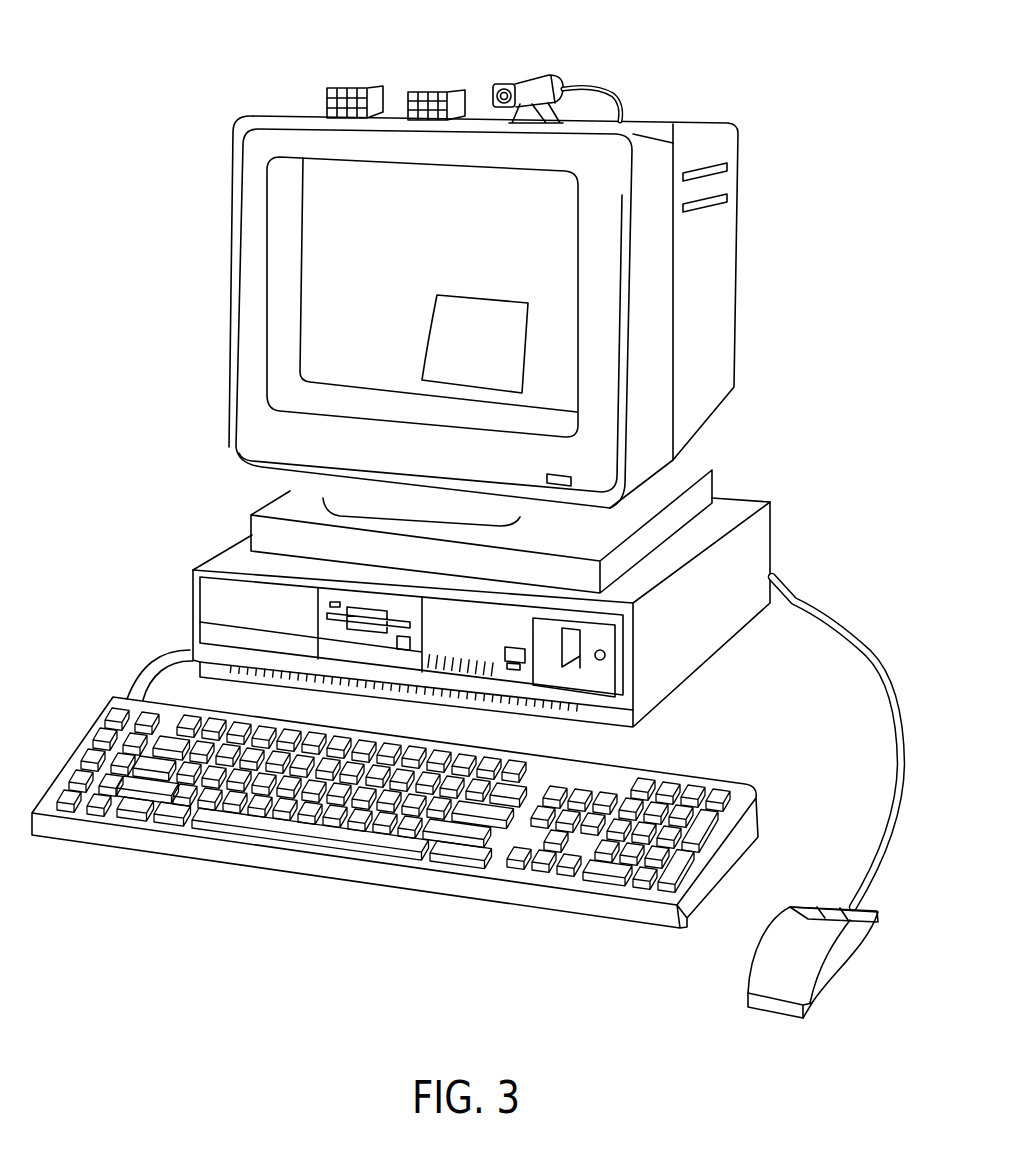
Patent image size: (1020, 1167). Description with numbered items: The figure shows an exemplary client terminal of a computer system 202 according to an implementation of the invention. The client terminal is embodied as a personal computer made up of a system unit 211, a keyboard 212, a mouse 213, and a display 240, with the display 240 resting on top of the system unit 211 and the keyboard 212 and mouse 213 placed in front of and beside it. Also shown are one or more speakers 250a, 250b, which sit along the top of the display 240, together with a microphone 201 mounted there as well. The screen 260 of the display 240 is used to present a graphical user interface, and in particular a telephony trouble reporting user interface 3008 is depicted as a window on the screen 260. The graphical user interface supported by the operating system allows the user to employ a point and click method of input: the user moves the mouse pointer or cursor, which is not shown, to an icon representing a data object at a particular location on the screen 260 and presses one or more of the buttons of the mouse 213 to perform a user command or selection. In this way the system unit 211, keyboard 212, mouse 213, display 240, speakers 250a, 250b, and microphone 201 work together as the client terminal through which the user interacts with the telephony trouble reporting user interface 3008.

The microphone 201 is at (547, 82).
The computer system 202 is at (180, 398).
The system unit 211 is at (193, 590).
The keyboard 212 is at (137, 850).
The mouse 213 is at (848, 973).
The display 240 is at (229, 252).
The speaker 250a is at (354, 88).
The speaker 250b is at (440, 90).
The screen 260 is at (381, 315).
The telephony trouble reporting user interface 3008 is at (467, 296).